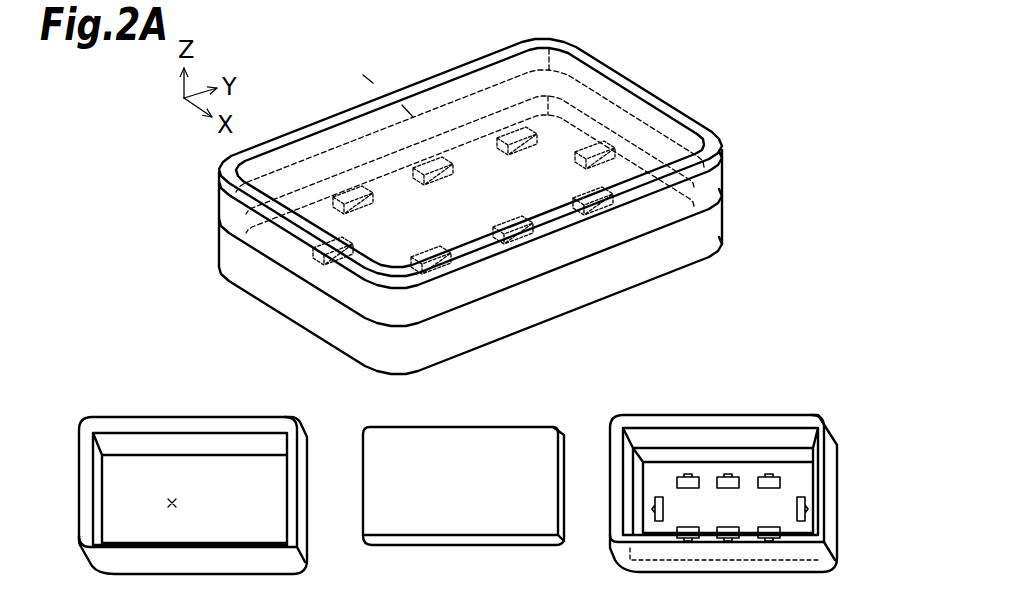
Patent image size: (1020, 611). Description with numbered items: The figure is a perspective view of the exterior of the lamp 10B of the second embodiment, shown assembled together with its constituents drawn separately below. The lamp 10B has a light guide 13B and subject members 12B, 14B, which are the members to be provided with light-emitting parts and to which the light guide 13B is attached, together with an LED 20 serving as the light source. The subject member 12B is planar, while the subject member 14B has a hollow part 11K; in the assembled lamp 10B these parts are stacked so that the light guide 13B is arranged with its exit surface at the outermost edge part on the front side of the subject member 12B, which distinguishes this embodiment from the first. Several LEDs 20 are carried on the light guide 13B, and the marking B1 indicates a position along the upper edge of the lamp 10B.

The lamp 10B is at (670, 74).
The hollow part 11K is at (177, 503).
The subject member 12B is at (540, 193).
The light guide 13B is at (711, 192).
The subject member 14B is at (713, 234).
The LED 20 is at (357, 211).
The boundary line B1 is at (367, 80).